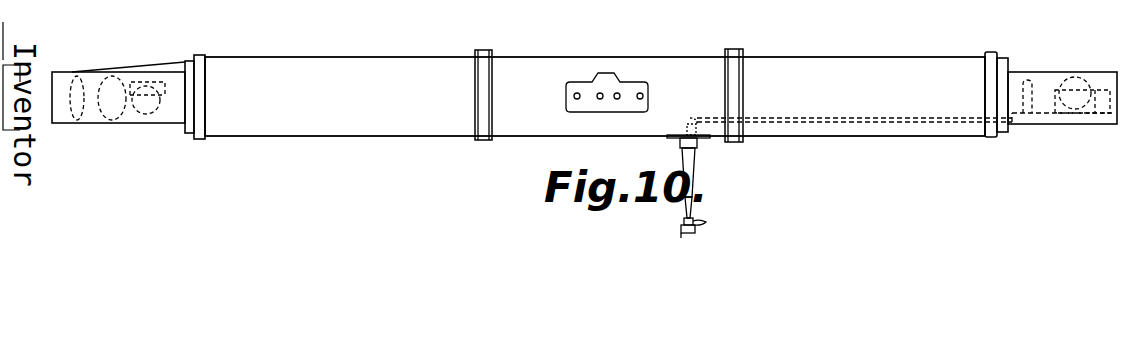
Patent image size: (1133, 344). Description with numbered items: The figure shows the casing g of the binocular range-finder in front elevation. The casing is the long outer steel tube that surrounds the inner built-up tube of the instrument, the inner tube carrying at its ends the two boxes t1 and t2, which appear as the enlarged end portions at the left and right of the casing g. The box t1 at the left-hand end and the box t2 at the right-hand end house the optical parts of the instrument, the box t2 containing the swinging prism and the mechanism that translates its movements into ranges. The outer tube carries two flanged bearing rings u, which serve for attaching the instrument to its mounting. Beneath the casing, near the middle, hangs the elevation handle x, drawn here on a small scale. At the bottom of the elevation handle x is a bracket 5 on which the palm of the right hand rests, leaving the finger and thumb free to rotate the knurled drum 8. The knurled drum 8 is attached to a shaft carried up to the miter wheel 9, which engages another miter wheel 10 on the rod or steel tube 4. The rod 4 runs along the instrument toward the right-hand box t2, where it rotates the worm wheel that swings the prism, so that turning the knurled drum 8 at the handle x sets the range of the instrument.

The casing of the instrument g is at (546, 58).
The flanged bearing rings u is at (482, 141).
The box at the left hand end t1 is at (97, 120).
The box at the right hand end t2 is at (1063, 120).
The rod or steel tube 4 is at (820, 122).
The miter wheel 9 is at (683, 128).
The miter wheel 10 is at (692, 117).
The elevation handle x is at (696, 175).
The bracket 5 is at (707, 225).
The knurled drum 8 is at (696, 229).